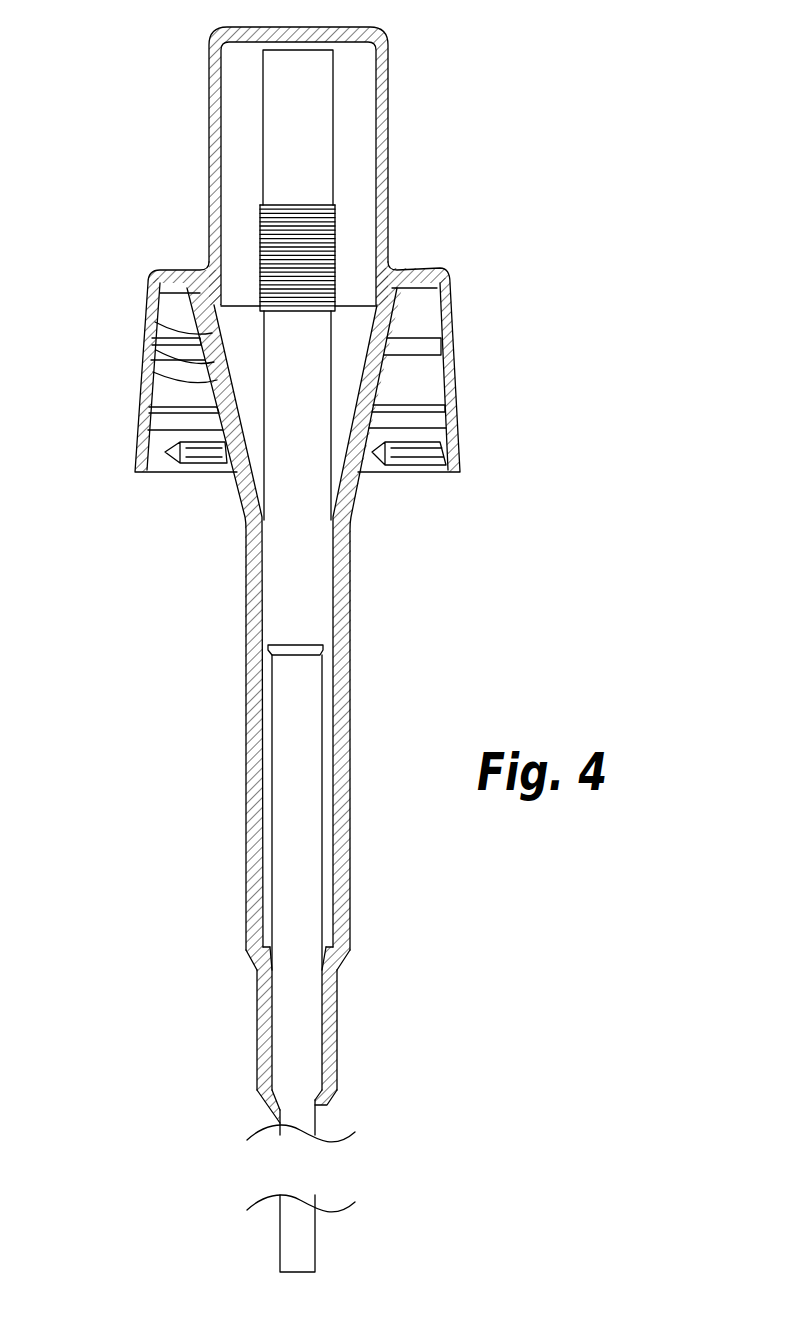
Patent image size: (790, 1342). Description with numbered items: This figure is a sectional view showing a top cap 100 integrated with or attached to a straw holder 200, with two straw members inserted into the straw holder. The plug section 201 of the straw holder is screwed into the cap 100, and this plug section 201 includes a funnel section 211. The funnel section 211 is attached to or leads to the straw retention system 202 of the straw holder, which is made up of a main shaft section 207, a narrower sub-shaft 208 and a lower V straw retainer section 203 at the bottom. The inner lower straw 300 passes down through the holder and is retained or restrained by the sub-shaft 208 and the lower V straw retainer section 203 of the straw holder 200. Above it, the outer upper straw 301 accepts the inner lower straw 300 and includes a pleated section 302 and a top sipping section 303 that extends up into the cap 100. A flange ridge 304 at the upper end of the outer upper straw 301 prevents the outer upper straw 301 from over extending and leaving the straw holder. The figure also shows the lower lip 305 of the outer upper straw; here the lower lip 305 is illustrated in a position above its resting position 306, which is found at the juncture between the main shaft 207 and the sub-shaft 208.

The top cap 100 is at (210, 53).
The straw holder 200 is at (372, 703).
The plug section 201 is at (468, 267).
The straw retention system 202 is at (230, 507).
The lower V straw retainer section 203 is at (327, 1108).
The main shaft section 207 is at (352, 557).
The sub-shaft 208 is at (341, 1012).
The funnel section 211 is at (190, 340).
The inner lower straw 300 is at (303, 843).
The outer upper straw 301 is at (318, 385).
The pleated section 302 is at (312, 247).
The top sipping section 303 is at (317, 98).
The flange ridge 304 is at (300, 643).
The lower lip 305 is at (325, 785).
The lower lip resting position 306 is at (327, 947).